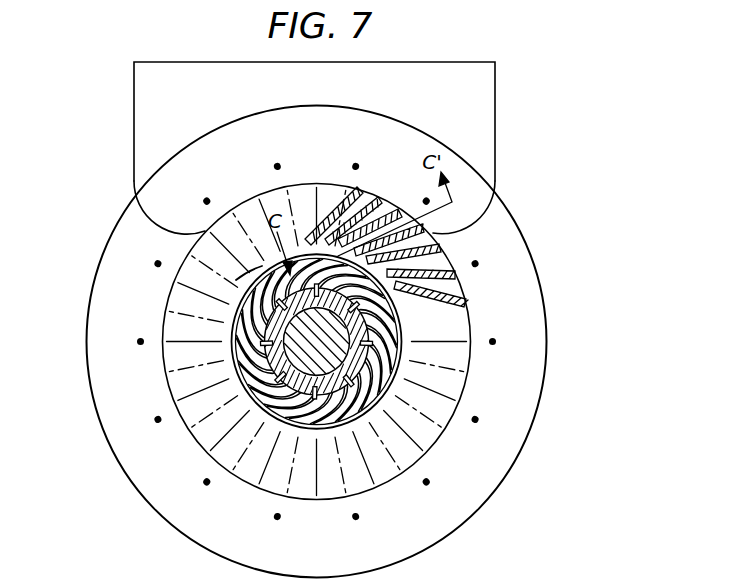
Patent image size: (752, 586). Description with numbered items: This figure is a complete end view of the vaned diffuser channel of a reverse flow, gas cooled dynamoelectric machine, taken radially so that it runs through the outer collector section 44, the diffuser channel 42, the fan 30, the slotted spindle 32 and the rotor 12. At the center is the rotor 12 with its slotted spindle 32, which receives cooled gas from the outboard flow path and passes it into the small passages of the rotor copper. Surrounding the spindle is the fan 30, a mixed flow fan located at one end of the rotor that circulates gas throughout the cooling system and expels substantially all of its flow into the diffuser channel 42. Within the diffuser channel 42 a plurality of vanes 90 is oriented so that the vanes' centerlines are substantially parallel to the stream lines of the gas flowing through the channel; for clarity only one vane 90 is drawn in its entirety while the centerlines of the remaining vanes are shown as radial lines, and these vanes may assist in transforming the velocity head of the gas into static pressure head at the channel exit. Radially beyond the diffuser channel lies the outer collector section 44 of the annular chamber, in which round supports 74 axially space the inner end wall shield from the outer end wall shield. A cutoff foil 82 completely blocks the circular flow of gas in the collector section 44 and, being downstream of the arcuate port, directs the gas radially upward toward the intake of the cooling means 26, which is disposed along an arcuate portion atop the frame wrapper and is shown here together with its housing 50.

The rotor 12 is at (303, 353).
The cooling means 26 is at (436, 50).
The fan 30 is at (332, 421).
The slotted spindle 32 is at (250, 293).
The diffuser channel 42 is at (427, 423).
The outer collector section 44 is at (520, 395).
The housing cover 50 is at (436, 89).
The round support 74 is at (435, 478).
The cutoff foil 82 is at (488, 217).
The vane 90 is at (463, 298).